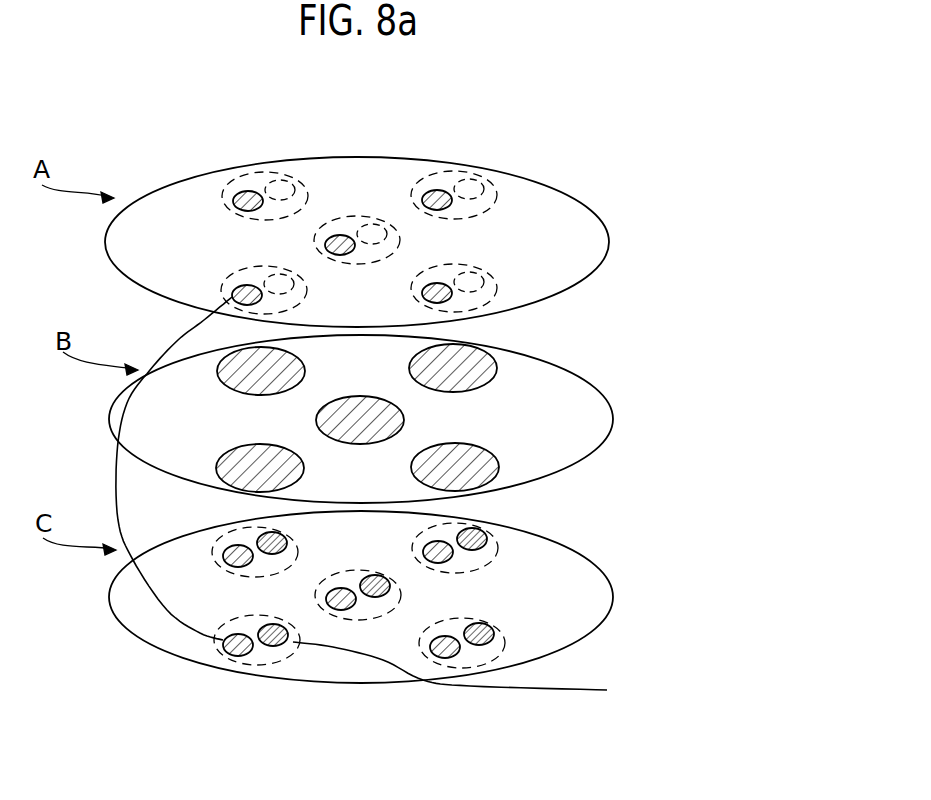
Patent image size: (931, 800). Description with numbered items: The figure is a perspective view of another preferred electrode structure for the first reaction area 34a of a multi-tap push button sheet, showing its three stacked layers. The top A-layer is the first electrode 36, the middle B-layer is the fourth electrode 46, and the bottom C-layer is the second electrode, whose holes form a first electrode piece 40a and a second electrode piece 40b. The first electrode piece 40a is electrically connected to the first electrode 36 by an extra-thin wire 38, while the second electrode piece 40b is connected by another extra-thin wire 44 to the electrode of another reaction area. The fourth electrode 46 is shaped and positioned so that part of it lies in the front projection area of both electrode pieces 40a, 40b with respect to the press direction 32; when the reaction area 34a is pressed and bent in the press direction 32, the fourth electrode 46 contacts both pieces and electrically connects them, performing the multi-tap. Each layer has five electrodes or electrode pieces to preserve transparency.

The press direction 32 is at (357, 142).
The first reaction area 34a is at (589, 165).
The first electrode 36 is at (232, 283).
The extra-thin wire 38 is at (180, 676).
The first electrode piece 40a is at (233, 657).
The second electrode piece 40b is at (270, 655).
The extra-thin wire 44 is at (543, 692).
The fourth electrode 46 is at (218, 470).